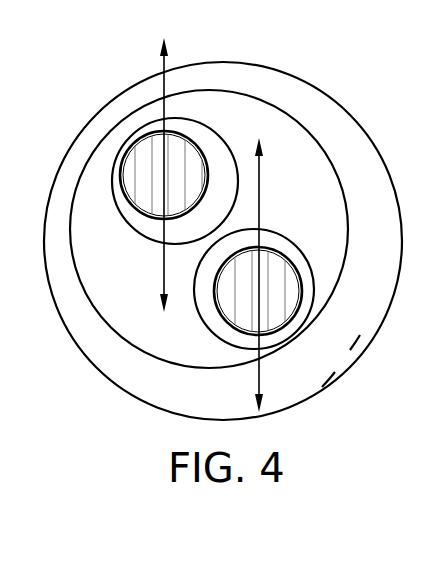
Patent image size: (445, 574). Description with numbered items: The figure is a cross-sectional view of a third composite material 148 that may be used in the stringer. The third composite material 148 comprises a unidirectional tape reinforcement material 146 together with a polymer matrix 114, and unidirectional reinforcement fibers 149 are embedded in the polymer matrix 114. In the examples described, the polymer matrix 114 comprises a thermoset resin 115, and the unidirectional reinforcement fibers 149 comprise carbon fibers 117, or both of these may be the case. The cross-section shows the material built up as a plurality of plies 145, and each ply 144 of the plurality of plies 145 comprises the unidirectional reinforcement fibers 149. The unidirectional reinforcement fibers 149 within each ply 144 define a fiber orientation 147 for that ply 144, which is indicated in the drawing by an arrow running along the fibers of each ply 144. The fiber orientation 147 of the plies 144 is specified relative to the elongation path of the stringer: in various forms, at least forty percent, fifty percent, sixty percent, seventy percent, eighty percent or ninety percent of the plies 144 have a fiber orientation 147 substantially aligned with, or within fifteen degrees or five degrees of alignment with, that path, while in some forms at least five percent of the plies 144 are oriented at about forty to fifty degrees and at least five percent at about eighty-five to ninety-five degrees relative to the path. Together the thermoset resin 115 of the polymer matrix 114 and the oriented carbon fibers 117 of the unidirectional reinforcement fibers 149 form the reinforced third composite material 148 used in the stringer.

The polymer matrix 114 is at (353, 334).
The thermoset resin 115 is at (318, 376).
The carbon fibers 117 is at (150, 148).
The ply 144 is at (127, 227).
The plurality of plies 145 is at (340, 287).
The unidirectional tape reinforcement material 146 is at (188, 148).
The fiber orientation 147 is at (163, 63).
The third composite material 148 is at (316, 84).
The unidirectional reinforcement fibers 149 is at (197, 148).